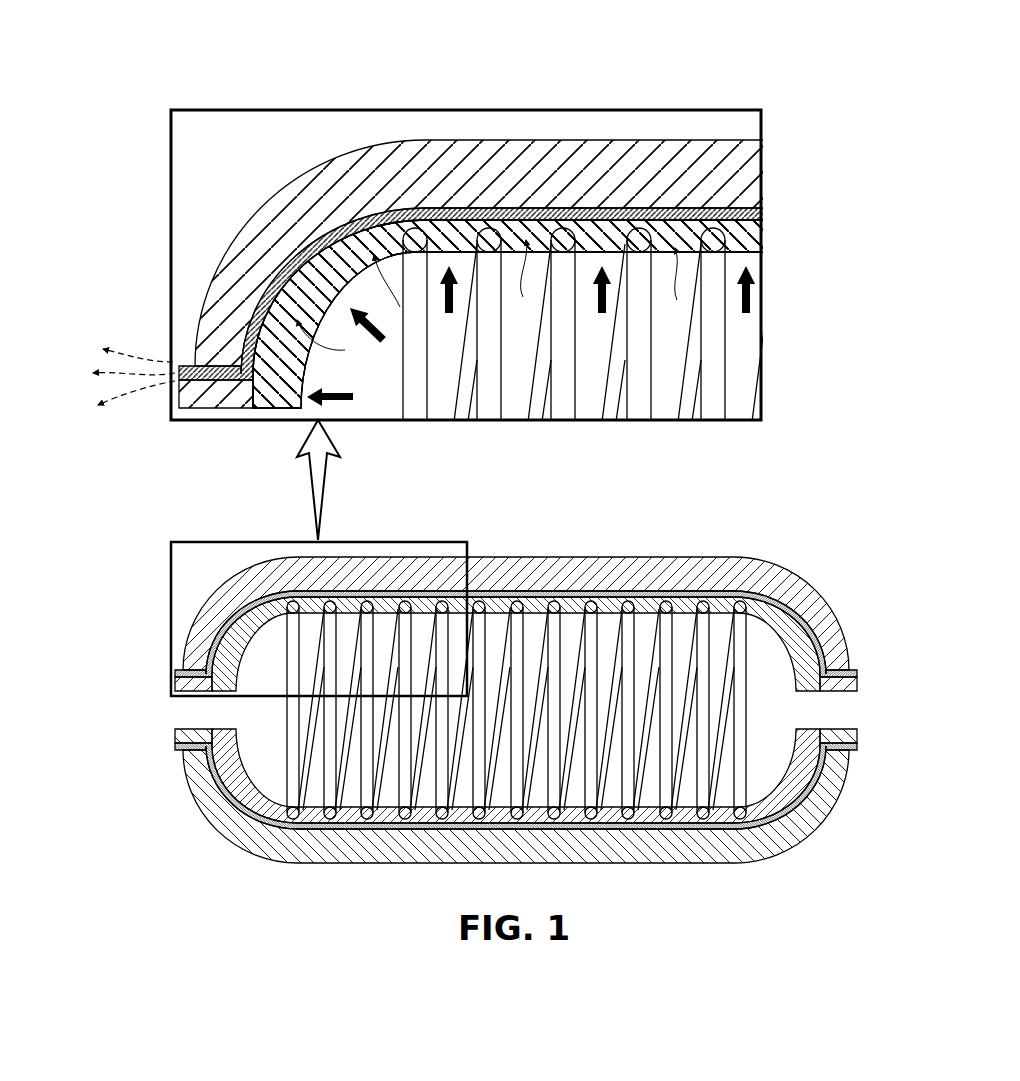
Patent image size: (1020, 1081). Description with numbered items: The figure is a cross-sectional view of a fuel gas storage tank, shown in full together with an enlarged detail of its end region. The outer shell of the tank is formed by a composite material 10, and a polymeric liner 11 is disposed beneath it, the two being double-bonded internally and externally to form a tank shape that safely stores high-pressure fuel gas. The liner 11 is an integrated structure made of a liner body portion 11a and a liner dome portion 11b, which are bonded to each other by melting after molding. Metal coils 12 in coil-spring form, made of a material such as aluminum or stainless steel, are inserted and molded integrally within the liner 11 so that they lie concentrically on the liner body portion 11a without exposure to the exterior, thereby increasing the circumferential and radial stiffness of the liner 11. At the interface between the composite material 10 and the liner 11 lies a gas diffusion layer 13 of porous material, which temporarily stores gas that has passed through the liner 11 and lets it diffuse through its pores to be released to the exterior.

The composite material 10 is at (780, 568).
The polymeric liner 11 is at (802, 648).
The liner body portion 11a is at (516, 228).
The liner dome portion 11b is at (343, 262).
The metal coils 12 is at (755, 610).
The gas diffusion layer 13 is at (818, 600).